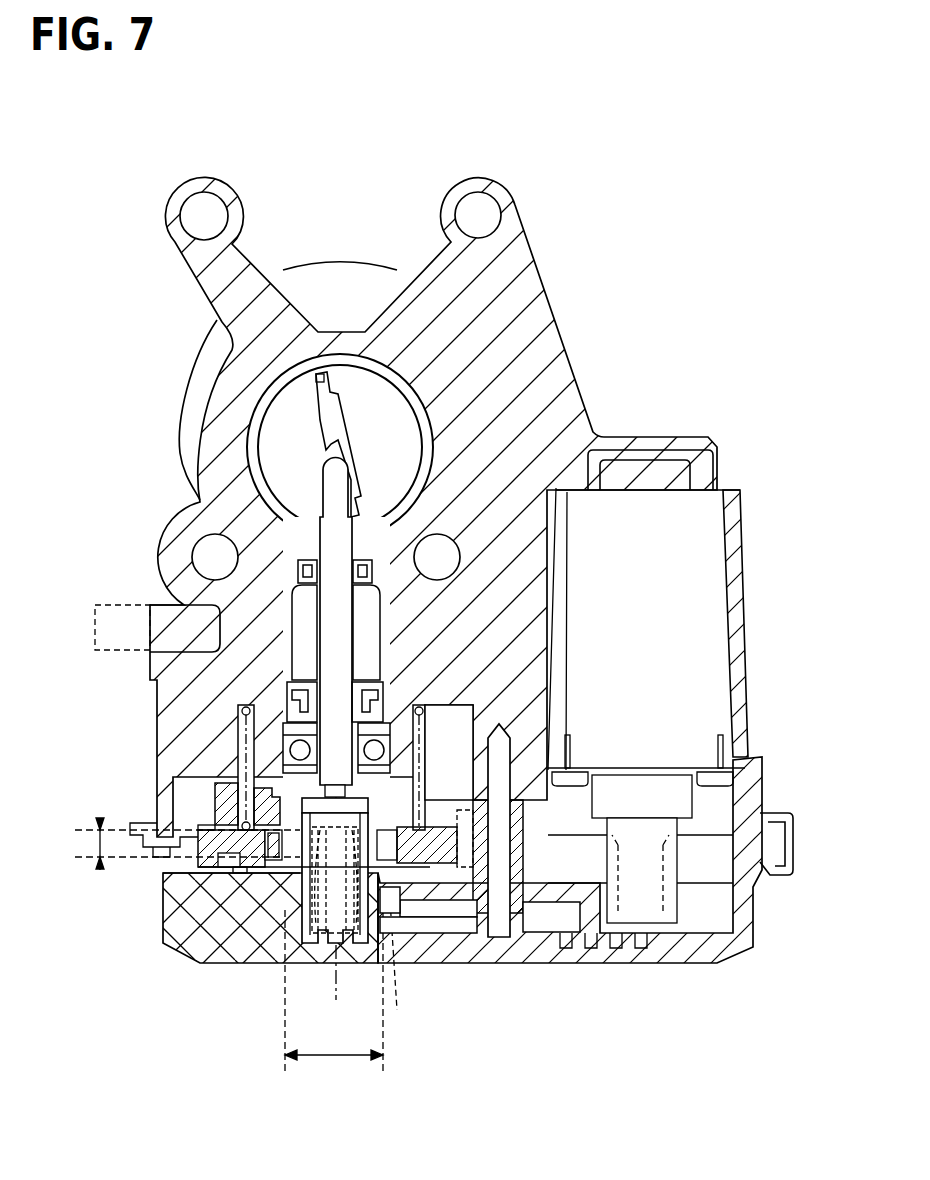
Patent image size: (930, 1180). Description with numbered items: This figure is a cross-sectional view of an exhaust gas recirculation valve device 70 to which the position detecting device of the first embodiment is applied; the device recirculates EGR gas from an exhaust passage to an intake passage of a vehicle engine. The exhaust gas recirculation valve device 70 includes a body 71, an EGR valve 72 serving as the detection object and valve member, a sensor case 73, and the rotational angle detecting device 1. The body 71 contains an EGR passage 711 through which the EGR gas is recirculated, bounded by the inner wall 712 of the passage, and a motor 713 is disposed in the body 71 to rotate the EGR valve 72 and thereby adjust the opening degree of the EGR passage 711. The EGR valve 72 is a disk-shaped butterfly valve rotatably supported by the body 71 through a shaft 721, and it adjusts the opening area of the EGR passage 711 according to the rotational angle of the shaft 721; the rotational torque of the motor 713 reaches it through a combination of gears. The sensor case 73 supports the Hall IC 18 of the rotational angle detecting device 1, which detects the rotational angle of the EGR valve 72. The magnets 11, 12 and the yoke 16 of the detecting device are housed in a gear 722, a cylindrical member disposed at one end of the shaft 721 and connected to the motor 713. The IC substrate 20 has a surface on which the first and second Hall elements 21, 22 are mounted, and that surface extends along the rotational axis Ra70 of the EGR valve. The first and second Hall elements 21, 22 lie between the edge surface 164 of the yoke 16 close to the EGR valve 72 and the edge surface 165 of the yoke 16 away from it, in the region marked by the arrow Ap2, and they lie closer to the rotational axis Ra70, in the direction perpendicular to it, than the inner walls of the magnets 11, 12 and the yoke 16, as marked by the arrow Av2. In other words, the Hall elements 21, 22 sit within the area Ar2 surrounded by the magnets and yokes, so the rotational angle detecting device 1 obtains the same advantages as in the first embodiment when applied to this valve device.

The exhaust gas recirculation valve device 70 is at (141, 312).
The body 71 is at (543, 392).
The EGR passage 711 is at (362, 402).
The bore wall 712 is at (384, 373).
The motor 713 is at (697, 552).
The EGR valve 72 is at (325, 358).
The shaft 721 is at (327, 603).
The gear 722 is at (225, 810).
The sensor case 73 is at (703, 953).
The rotational axis Ra70 is at (330, 553).
The edge surface 164 is at (225, 780).
The area Ar2 is at (218, 820).
The region Ap2 is at (97, 843).
The IC substrate 20 is at (262, 862).
The rotational angle detecting device 1 is at (236, 877).
The magnet 12 is at (268, 872).
The edge surface 165 is at (240, 868).
The Hall IC 18 is at (308, 940).
The second Hall element 22 is at (342, 925).
The first Hall element 21 is at (400, 969).
The yoke 16 is at (386, 905).
The magnet 11 is at (412, 898).
The area Av2 is at (338, 1058).